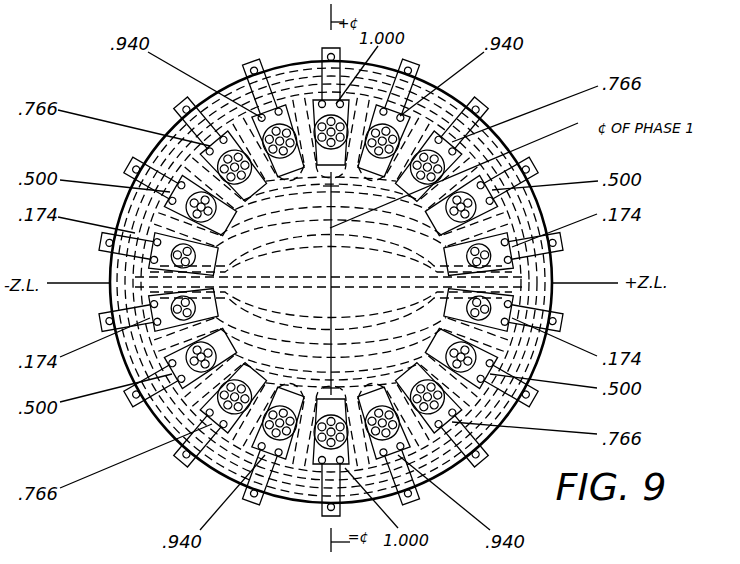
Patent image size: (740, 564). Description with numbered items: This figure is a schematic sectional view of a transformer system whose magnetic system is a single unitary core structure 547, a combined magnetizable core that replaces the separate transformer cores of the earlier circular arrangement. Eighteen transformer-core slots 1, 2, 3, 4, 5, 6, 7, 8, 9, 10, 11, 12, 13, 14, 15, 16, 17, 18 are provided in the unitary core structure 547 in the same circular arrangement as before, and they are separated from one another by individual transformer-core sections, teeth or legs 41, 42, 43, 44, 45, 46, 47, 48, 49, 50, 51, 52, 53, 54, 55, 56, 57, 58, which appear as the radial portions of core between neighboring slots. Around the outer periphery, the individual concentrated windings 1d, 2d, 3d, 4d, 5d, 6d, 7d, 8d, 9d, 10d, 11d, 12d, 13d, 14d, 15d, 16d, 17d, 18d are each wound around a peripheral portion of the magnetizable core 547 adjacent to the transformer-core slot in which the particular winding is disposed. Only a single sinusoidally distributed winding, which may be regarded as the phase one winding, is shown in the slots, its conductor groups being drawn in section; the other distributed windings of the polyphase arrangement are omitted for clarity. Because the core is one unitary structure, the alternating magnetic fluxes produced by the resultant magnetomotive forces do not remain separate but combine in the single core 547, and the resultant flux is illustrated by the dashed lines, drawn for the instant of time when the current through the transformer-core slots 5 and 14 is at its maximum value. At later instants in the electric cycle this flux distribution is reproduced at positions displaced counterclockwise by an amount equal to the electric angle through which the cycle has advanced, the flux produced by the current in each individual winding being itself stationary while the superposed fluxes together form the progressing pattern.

The transformer-core slot 1 is at (478, 256).
The transformer-core slot 2 is at (460, 207).
The transformer-core slot 3 is at (426, 167).
The transformer-core slot 4 is at (382, 141).
The transformer-core slot 5 is at (331, 132).
The transformer-core slot 6 is at (280, 141).
The transformer-core slot 7 is at (234, 167).
The transformer-core slot 8 is at (201, 207).
The transformer-core slot 9 is at (184, 256).
The transformer-core slot 10 is at (184, 308).
The transformer-core slot 11 is at (201, 357).
The transformer-core slot 12 is at (234, 396).
The transformer-core slot 13 is at (280, 422).
The transformer-core slot 14 is at (331, 429).
The transformer-core slot 15 is at (382, 422).
The transformer-core slot 16 is at (426, 396).
The transformer-core slot 17 is at (460, 357).
The transformer-core slot 18 is at (478, 308).
The transformer-core section 41 is at (473, 267).
The transformer-core section 42 is at (460, 211).
The transformer-core section 43 is at (427, 168).
The transformer-core section 44 is at (384, 141).
The transformer-core section 45 is at (339, 132).
The transformer-core section 46 is at (284, 141).
The transformer-core section 47 is at (241, 167).
The transformer-core section 48 is at (203, 202).
The transformer-core section 49 is at (185, 247).
The transformer-core section 50 is at (183, 299).
The transformer-core section 51 is at (200, 352).
The transformer-core section 52 is at (235, 396).
The transformer-core section 53 is at (276, 423).
The transformer-core section 54 is at (320, 432).
The transformer-core section 55 is at (377, 423).
The transformer-core section 56 is at (421, 397).
The transformer-core section 57 is at (456, 362).
The transformer-core section 58 is at (477, 317).
The concentrated winding 1d is at (542, 246).
The concentrated winding 2d is at (519, 175).
The concentrated winding 3d is at (466, 112).
The concentrated winding 4d is at (402, 76).
The concentrated winding 5d is at (325, 65).
The concentrated winding 6d is at (255, 76).
The concentrated winding 7d is at (188, 117).
The concentrated winding 8d is at (139, 174).
The concentrated winding 9d is at (113, 245).
The concentrated winding 10d is at (108, 319).
The concentrated winding 11d is at (136, 391).
The concentrated winding 12d is at (186, 447).
The concentrated winding 13d is at (253, 486).
The concentrated winding 14d is at (324, 499).
The concentrated winding 15d is at (405, 486).
The concentrated winding 16d is at (471, 447).
The concentrated winding 17d is at (523, 389).
The concentrated winding 18d is at (545, 319).
The unitary core structure 547 is at (549, 300).